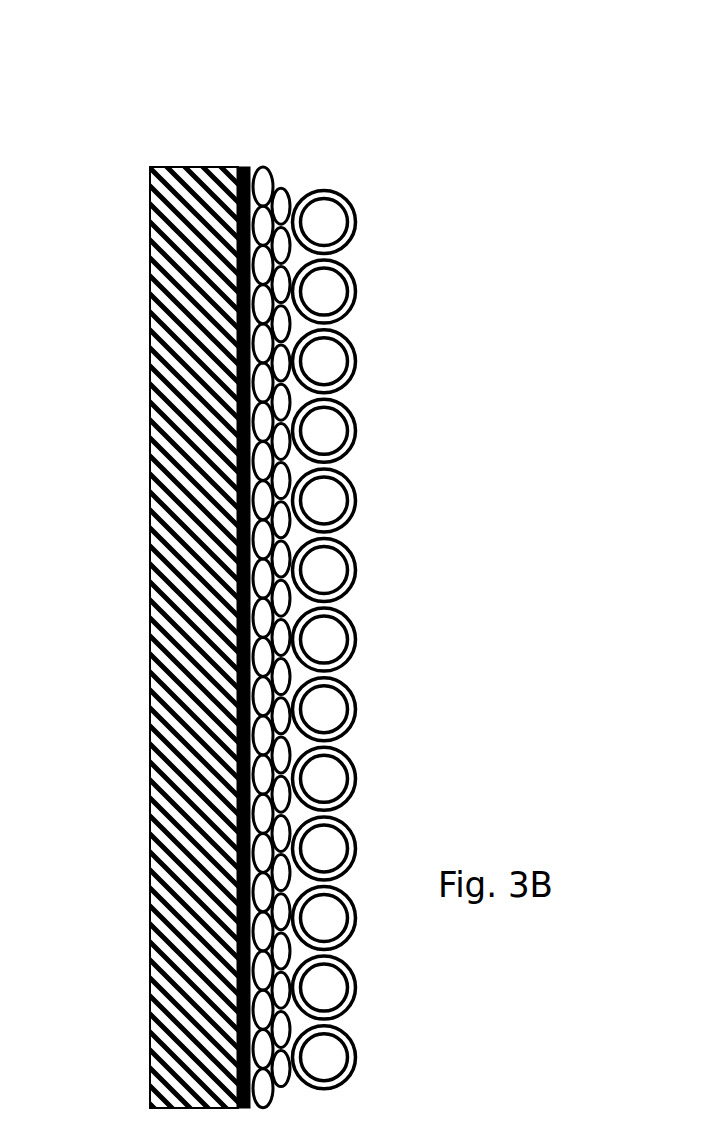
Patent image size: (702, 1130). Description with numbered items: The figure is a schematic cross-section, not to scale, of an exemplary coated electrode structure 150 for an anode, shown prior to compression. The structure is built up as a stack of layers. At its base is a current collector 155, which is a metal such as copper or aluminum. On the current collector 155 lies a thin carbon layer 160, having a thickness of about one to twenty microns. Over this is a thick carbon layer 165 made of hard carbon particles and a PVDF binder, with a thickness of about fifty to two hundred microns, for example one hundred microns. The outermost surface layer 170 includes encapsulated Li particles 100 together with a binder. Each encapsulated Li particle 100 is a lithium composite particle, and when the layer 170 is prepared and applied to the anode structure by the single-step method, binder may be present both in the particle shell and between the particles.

The encapsulated Li particle 100 is at (355, 343).
The coated electrode structure 150 is at (252, 81).
The current collector 155 is at (160, 262).
The thin carbon layer 160 is at (246, 167).
The thick carbon layer 165 is at (254, 160).
The layer including encapsulated Li particles and a binder 170 is at (394, 635).